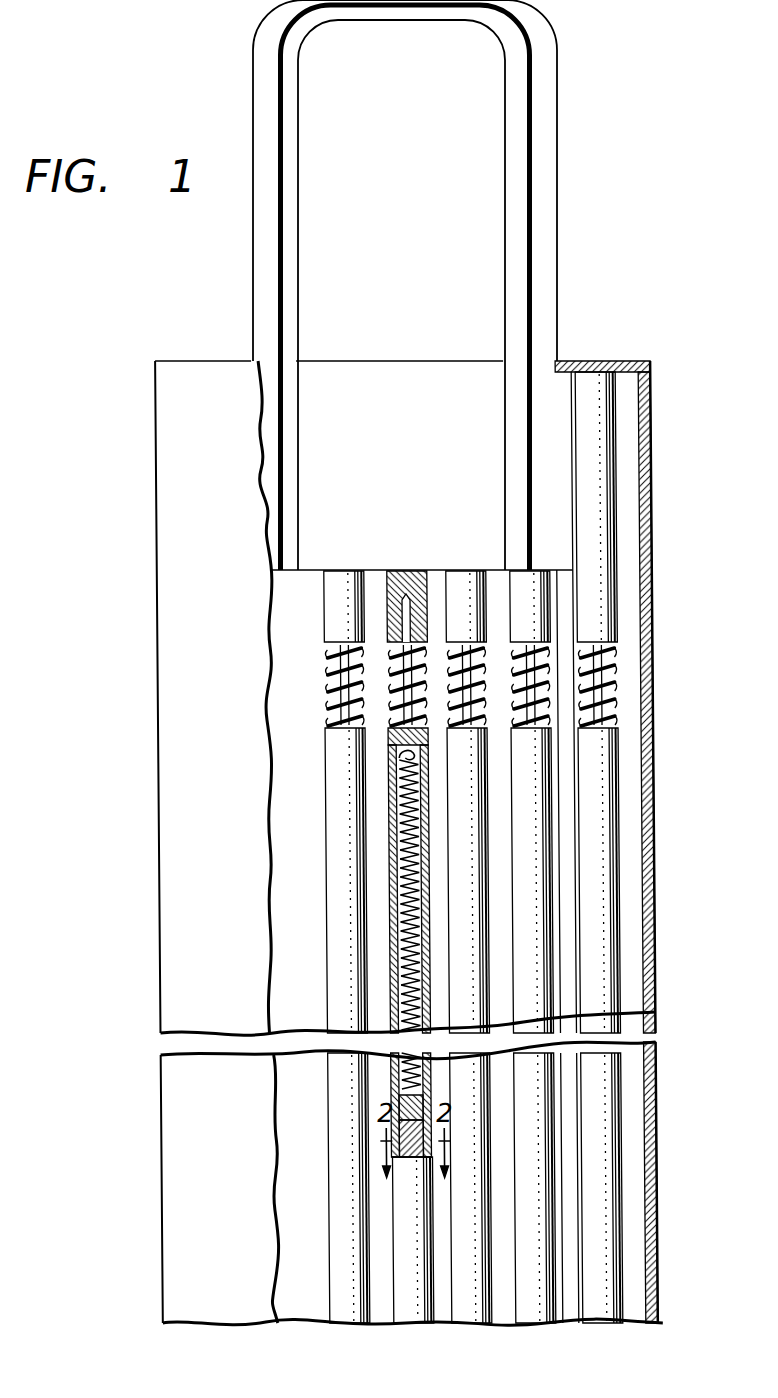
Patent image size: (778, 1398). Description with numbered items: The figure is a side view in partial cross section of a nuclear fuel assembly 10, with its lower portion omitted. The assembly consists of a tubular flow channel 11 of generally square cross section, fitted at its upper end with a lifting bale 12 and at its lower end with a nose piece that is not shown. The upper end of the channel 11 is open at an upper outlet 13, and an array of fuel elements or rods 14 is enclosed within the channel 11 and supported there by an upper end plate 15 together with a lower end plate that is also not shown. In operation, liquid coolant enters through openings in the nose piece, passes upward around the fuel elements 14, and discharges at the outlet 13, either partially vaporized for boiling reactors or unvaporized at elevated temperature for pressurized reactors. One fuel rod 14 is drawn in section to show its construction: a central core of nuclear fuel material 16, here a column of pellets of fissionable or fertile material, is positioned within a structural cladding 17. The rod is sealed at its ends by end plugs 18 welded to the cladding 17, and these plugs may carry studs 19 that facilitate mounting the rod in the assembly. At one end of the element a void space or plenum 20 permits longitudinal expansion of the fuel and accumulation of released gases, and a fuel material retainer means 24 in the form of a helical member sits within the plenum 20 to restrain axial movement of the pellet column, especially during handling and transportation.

The nuclear fuel assembly 10 is at (578, 243).
The tubular flow channel 11 is at (655, 806).
The lifting bale 12 is at (557, 50).
The upper outlet 13 is at (375, 361).
The fuel elements or rods 14 is at (325, 862).
The upper end plate 15 is at (550, 610).
The nuclear fuel material 16 is at (392, 1096).
The cladding 17 is at (390, 915).
The end plugs 18 is at (433, 722).
The studs 19 is at (617, 703).
The void space or plenum 20 is at (397, 945).
The fuel material retainer means 24 is at (395, 817).